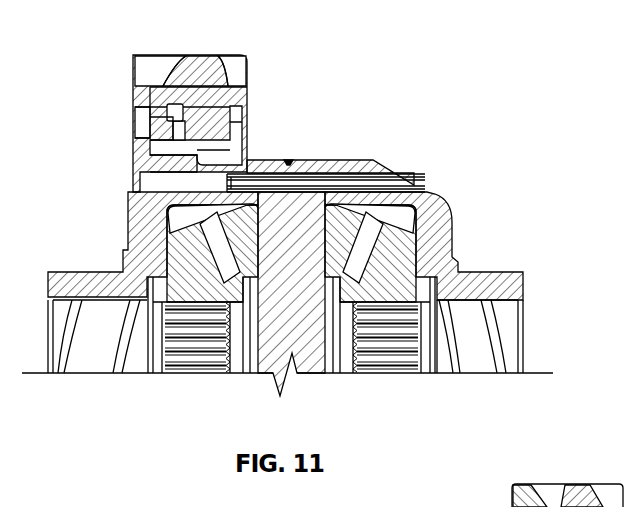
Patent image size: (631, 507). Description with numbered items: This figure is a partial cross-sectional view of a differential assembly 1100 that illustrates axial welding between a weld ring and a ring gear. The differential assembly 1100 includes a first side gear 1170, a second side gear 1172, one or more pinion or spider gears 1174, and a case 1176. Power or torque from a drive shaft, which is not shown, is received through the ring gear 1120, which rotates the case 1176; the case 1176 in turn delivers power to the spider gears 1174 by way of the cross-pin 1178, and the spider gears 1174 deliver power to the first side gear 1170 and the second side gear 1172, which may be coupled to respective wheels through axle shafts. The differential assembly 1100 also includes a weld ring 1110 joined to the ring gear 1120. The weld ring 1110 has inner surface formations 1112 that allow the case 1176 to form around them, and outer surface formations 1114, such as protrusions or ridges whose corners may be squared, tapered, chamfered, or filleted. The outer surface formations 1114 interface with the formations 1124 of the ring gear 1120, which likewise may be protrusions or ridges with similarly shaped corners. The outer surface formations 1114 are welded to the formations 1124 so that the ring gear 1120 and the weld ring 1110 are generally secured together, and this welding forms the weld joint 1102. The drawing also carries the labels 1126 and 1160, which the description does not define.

The differential assembly 1100 is at (289, 234).
The weld joint 1102 is at (268, 148).
The weld ring 1110 is at (163, 138).
The inner surface formations 1112 is at (170, 148).
The outer surface formations 1114 is at (163, 114).
The ring gear 1120 is at (214, 73).
The formations 1124 is at (233, 121).
The seal ring 1126 is at (181, 112).
The clutch housing fragment 1160 is at (550, 503).
The first side gear 1170 is at (210, 373).
The second side gear 1172 is at (383, 364).
The spider gears 1174 is at (344, 218).
The case 1176 is at (430, 250).
The cross-pin 1178 is at (347, 183).